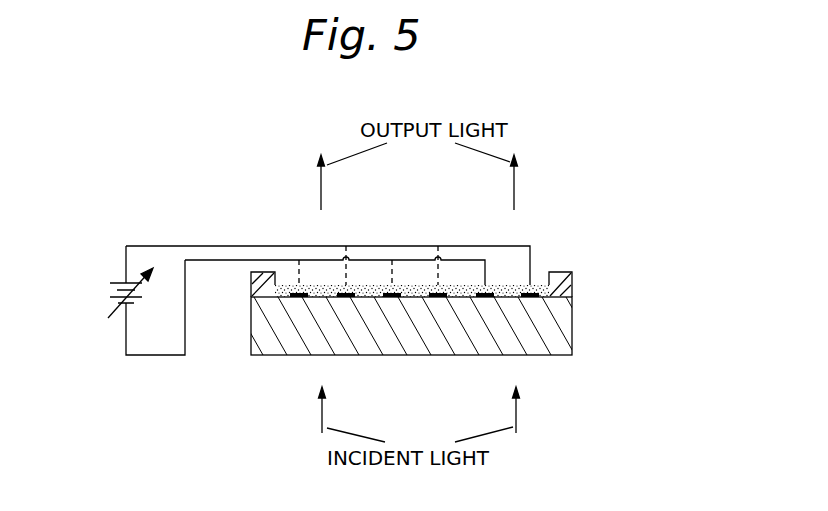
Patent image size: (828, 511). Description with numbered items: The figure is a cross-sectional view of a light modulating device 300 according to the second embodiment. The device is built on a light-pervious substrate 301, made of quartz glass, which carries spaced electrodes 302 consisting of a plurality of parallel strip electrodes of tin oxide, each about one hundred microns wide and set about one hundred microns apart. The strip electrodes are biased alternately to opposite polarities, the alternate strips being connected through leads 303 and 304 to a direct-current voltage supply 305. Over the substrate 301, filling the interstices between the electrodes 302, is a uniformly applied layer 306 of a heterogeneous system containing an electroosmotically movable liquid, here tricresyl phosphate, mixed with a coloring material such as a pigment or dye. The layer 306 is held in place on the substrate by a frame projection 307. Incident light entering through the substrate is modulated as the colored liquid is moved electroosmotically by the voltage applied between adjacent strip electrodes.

The light modulating device 300 is at (250, 193).
The light-pervious substrate 301 is at (573, 350).
The spaced electrodes 302 is at (488, 297).
The lead 303 is at (460, 246).
The lead 304 is at (399, 259).
The direct-current voltage supply 305 is at (112, 293).
The layer of heterogeneous system 306 is at (512, 284).
The frame projection 307 is at (569, 281).